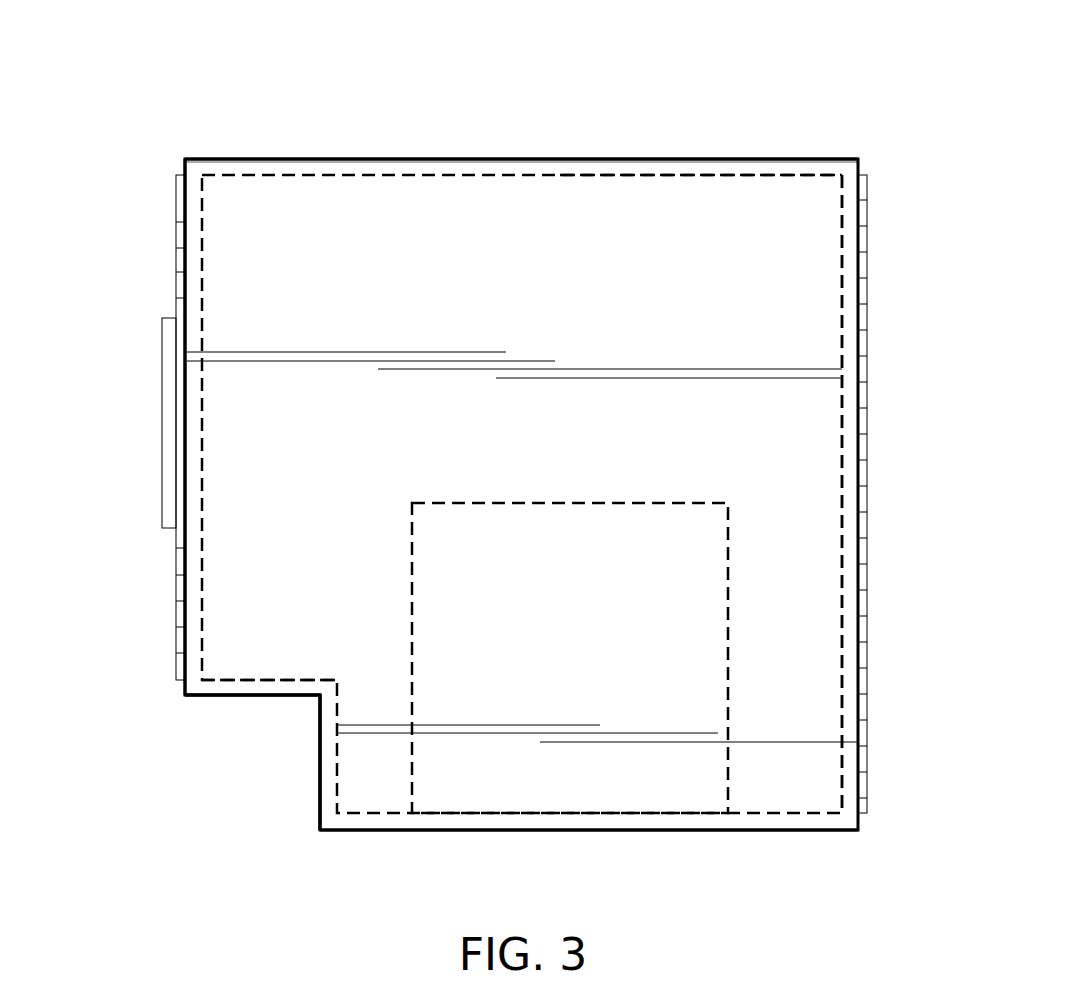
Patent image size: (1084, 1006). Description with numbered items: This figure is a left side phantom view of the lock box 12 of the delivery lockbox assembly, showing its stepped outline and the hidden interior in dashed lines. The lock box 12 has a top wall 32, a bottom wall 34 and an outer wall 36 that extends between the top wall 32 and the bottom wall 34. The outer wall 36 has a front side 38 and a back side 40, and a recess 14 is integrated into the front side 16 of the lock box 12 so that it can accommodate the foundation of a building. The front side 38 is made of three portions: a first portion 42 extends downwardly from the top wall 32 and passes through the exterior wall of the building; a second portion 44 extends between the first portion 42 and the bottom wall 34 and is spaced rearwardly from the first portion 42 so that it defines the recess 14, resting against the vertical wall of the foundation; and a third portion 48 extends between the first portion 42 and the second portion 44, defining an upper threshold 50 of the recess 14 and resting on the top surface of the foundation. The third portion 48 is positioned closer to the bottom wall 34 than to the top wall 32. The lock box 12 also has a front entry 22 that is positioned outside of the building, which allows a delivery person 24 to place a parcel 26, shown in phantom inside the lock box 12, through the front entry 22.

The lock box 12 is at (808, 142).
The recess 14 is at (277, 818).
The front side 16 is at (183, 601).
The front entry 22 is at (201, 287).
The delivery person 24 is at (842, 410).
The parcel 26 is at (548, 503).
The top wall 32 is at (423, 160).
The bottom wall 34 is at (414, 832).
The outer wall 36 is at (705, 200).
The front side 38 is at (183, 432).
The back side 40 is at (860, 515).
The first portion 42 is at (184, 196).
The second portion 44 is at (318, 787).
The third portion 48 is at (210, 698).
The upper threshold 50 is at (258, 698).